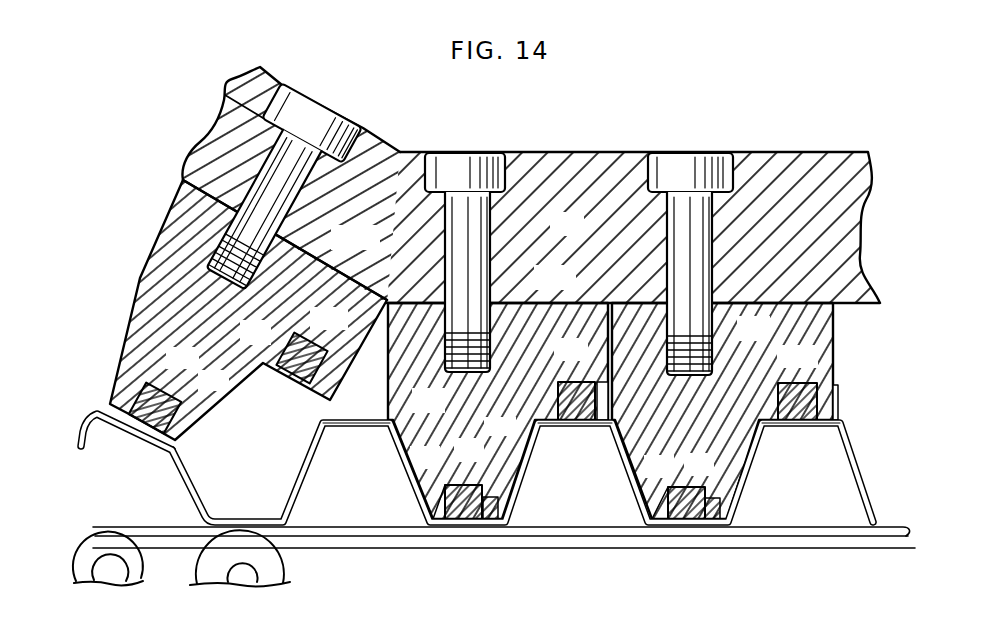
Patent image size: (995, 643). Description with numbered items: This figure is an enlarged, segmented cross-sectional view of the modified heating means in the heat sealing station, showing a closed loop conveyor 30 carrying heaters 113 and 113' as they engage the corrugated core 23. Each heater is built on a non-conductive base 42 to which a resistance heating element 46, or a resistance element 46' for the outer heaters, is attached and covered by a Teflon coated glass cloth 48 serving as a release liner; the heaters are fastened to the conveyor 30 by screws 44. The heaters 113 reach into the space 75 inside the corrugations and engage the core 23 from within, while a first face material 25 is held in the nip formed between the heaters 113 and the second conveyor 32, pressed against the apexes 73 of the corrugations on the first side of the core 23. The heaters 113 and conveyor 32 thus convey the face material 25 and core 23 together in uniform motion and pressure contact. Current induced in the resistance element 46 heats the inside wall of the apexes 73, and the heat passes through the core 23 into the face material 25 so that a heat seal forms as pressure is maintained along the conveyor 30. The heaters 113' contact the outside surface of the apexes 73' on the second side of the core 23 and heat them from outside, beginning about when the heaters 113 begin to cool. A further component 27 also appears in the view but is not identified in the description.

The corrugated core 23 is at (87, 432).
The first face material 25 is at (147, 538).
The roller 27 is at (137, 569).
The conveyor 30 is at (580, 234).
The second conveyor 32 is at (340, 561).
The non-conductive base 42 is at (441, 411).
The screws 44 is at (478, 249).
The resistance heating element 46 is at (421, 434).
The resistance element 46' is at (546, 363).
The Teflon coated glass cloth 48 is at (537, 425).
The apexes of corrugations 73 is at (495, 496).
The apexes of corrugations 73' is at (581, 455).
The space 75 is at (256, 474).
The heaters 113 is at (452, 412).
The heaters 113' is at (440, 302).